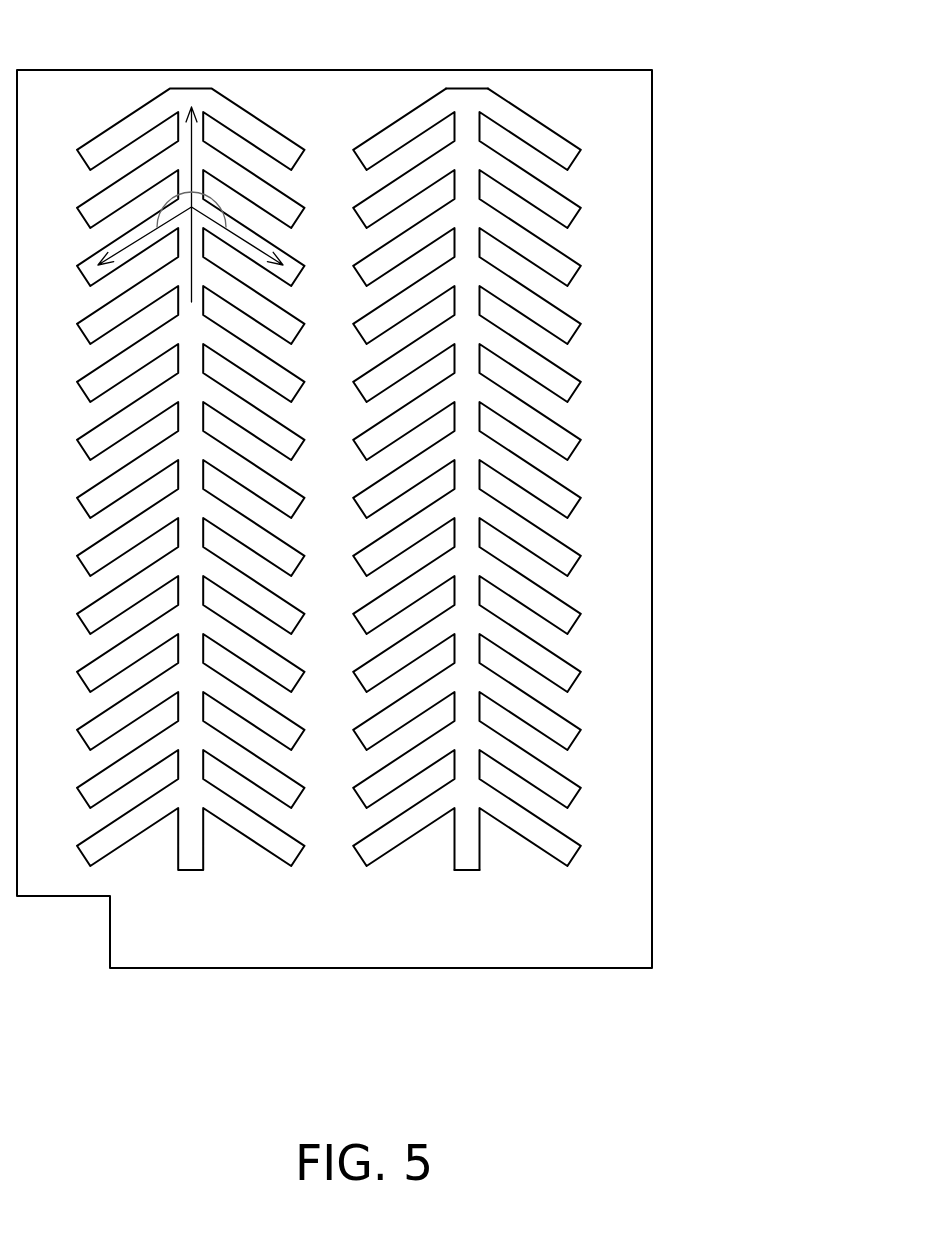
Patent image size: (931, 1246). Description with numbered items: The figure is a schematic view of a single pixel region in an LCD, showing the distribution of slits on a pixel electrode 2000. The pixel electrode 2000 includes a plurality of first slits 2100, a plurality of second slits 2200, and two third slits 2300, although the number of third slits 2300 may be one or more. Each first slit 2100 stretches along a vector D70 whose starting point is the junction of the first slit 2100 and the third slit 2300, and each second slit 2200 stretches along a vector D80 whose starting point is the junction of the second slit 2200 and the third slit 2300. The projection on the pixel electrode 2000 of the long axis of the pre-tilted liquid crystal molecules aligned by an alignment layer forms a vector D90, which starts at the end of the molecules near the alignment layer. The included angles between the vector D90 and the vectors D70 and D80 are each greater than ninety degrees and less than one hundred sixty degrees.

The pixel electrode 2000 is at (637, 223).
The first slit 2100 is at (415, 183).
The second slit 2200 is at (527, 183).
The third slit 2300 is at (470, 138).
The vector D70 is at (138, 242).
The vector D80 is at (248, 242).
The vector D90 is at (195, 138).